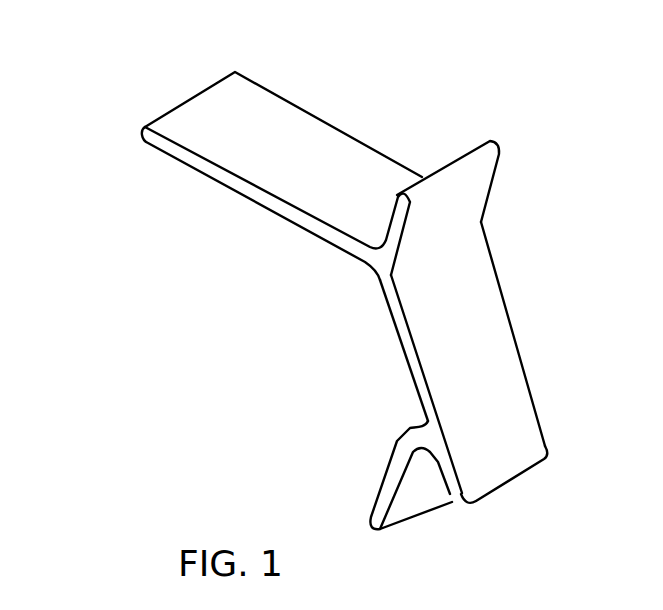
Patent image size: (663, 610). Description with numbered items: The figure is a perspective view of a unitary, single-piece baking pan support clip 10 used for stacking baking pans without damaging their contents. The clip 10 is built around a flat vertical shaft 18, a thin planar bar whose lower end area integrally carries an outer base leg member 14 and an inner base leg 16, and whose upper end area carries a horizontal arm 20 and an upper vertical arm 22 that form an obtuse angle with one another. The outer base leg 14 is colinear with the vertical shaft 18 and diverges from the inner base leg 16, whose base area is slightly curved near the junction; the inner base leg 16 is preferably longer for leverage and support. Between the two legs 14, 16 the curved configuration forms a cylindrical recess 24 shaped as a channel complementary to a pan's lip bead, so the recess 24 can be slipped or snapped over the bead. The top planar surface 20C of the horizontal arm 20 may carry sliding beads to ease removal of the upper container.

The baking pan support clip 10 is at (124, 74).
The outer base leg member 14 is at (504, 477).
The inner base leg 16 is at (381, 476).
The flat vertical shaft 18 is at (445, 345).
The horizontal arm 20 is at (282, 175).
The top planar surface 20C is at (308, 126).
The upper vertical arm 22 is at (483, 192).
The cylindrical recess 24 is at (430, 454).